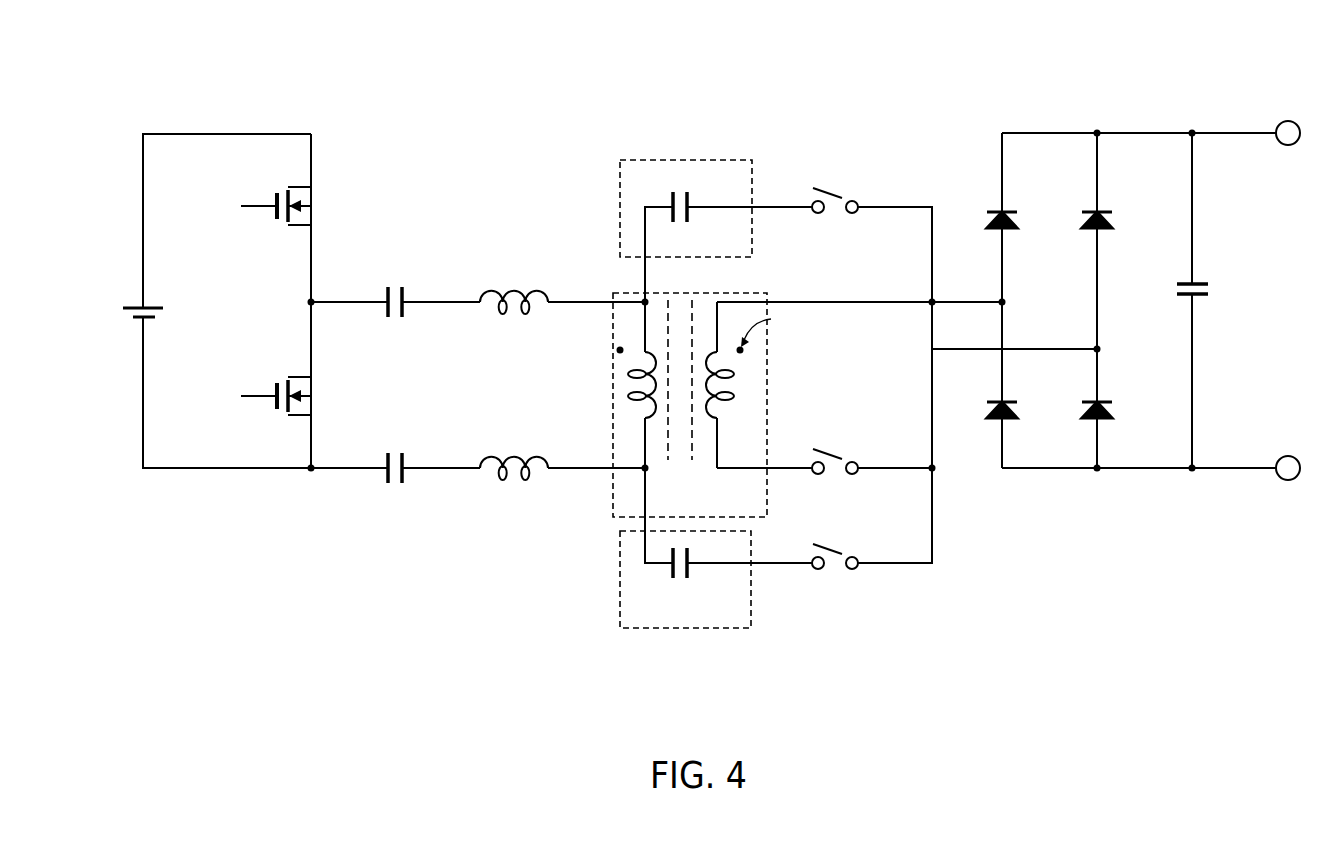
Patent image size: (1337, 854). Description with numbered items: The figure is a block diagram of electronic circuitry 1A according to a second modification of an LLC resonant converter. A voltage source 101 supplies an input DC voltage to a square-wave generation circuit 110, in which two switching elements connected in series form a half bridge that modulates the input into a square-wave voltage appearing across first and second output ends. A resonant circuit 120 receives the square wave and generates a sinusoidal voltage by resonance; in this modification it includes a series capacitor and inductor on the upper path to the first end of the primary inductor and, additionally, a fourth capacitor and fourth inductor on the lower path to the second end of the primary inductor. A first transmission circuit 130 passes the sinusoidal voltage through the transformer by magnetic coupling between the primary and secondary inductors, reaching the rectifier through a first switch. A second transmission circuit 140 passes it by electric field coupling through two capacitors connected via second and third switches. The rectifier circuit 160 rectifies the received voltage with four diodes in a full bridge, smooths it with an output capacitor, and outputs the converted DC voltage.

The electronic circuitry 1A is at (284, 27).
The voltage source 101 is at (217, 301).
The square-wave generation circuit 110 is at (280, 287).
The resonant circuit 120 is at (478, 286).
The first transmission circuit 130 is at (613, 378).
The second transmission circuit 140 is at (620, 167).
The rectifier circuit 160 is at (1135, 272).